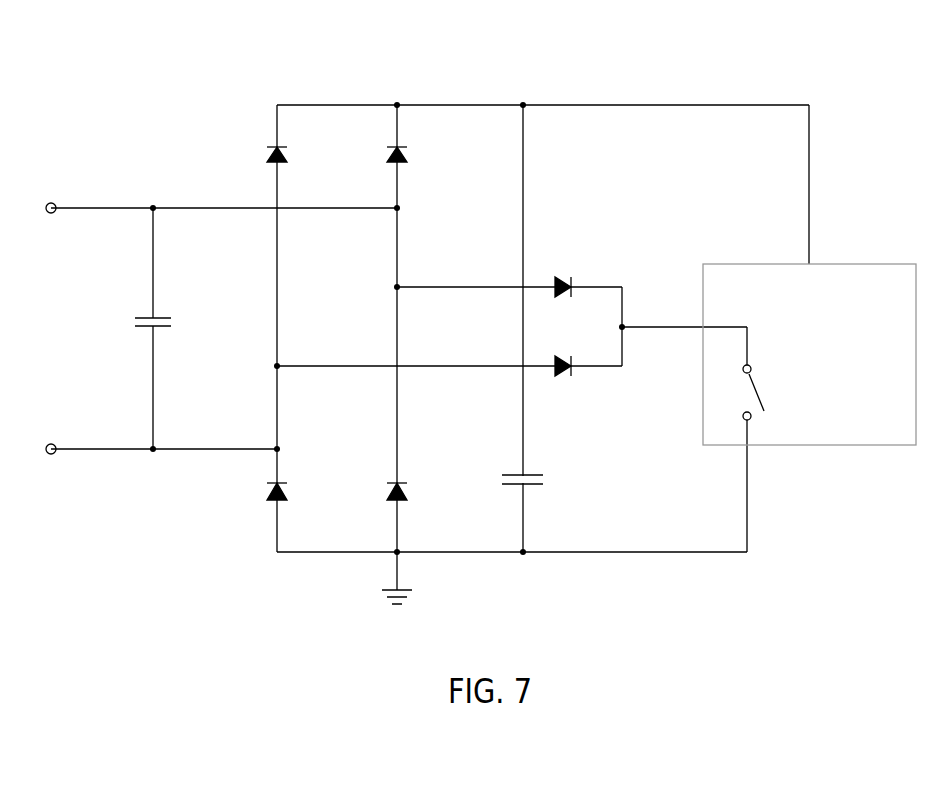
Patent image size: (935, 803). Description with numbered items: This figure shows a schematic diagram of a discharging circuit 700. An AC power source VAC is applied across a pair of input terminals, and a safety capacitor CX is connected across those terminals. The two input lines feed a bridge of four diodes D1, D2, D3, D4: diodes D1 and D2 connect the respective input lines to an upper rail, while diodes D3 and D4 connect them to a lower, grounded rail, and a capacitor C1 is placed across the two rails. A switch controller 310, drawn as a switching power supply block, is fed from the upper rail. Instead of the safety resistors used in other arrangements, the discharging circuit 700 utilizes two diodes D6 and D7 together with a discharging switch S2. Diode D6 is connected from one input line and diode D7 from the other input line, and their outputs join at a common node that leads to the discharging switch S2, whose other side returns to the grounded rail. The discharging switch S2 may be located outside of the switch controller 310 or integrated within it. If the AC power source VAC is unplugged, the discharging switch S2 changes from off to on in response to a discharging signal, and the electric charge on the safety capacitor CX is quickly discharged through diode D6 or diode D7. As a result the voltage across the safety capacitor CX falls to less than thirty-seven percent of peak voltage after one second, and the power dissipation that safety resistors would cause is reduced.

The discharging circuit 700 is at (146, 92).
The switch controller 310 is at (847, 263).
The diode D1 is at (283, 147).
The diode D2 is at (403, 147).
The diode D3 is at (283, 483).
The diode D4 is at (403, 483).
The diode D6 is at (572, 283).
The diode D7 is at (572, 362).
The capacitor C1 is at (532, 474).
The safety capacitor CX is at (158, 317).
The discharging switch S2 is at (753, 373).
The AC power source VAC is at (51, 330).